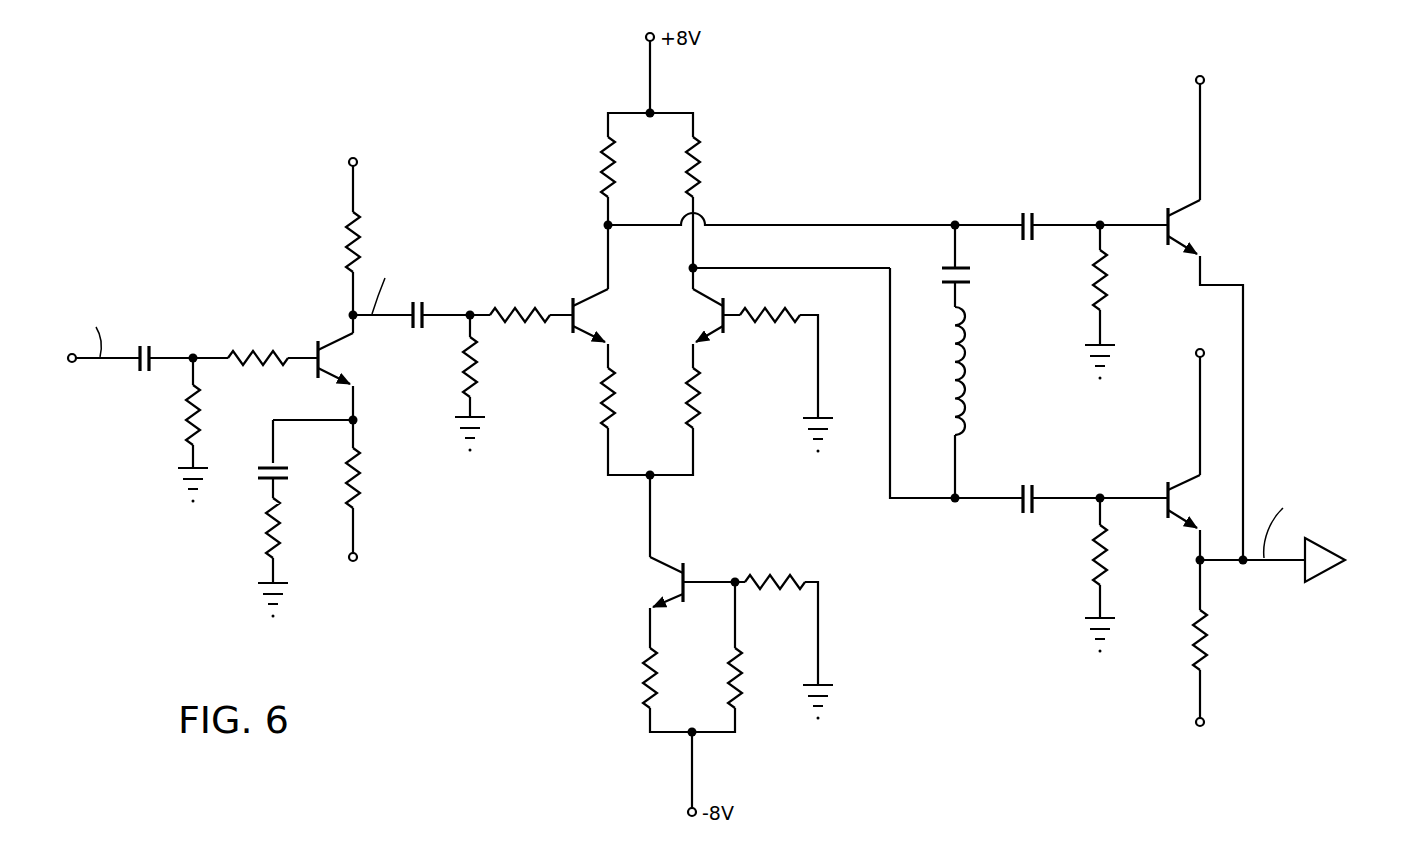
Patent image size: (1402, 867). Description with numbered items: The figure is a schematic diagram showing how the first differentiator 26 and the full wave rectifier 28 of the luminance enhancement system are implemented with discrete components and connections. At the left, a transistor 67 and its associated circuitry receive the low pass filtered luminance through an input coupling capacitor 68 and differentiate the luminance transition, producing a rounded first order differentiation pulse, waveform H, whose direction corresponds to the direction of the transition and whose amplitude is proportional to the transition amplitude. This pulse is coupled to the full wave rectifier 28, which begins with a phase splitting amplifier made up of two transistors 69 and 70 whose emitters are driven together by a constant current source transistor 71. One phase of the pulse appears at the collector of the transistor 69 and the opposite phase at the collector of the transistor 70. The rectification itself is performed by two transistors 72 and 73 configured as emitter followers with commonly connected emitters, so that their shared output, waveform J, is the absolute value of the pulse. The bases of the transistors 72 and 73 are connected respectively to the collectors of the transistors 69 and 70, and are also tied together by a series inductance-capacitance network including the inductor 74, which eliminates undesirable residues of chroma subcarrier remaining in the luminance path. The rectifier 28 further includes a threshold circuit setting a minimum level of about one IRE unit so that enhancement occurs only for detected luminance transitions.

The first differentiator 26 is at (418, 464).
The full wave rectifier 28 is at (957, 704).
The transistor 67 is at (322, 352).
The coupling capacitor 68 is at (164, 344).
The transistor 69 is at (576, 318).
The transistor 70 is at (721, 312).
The constant current source transistor 71 is at (678, 578).
The transistor 72 is at (1175, 228).
The transistor 73 is at (1175, 505).
The inductor 74 is at (953, 362).